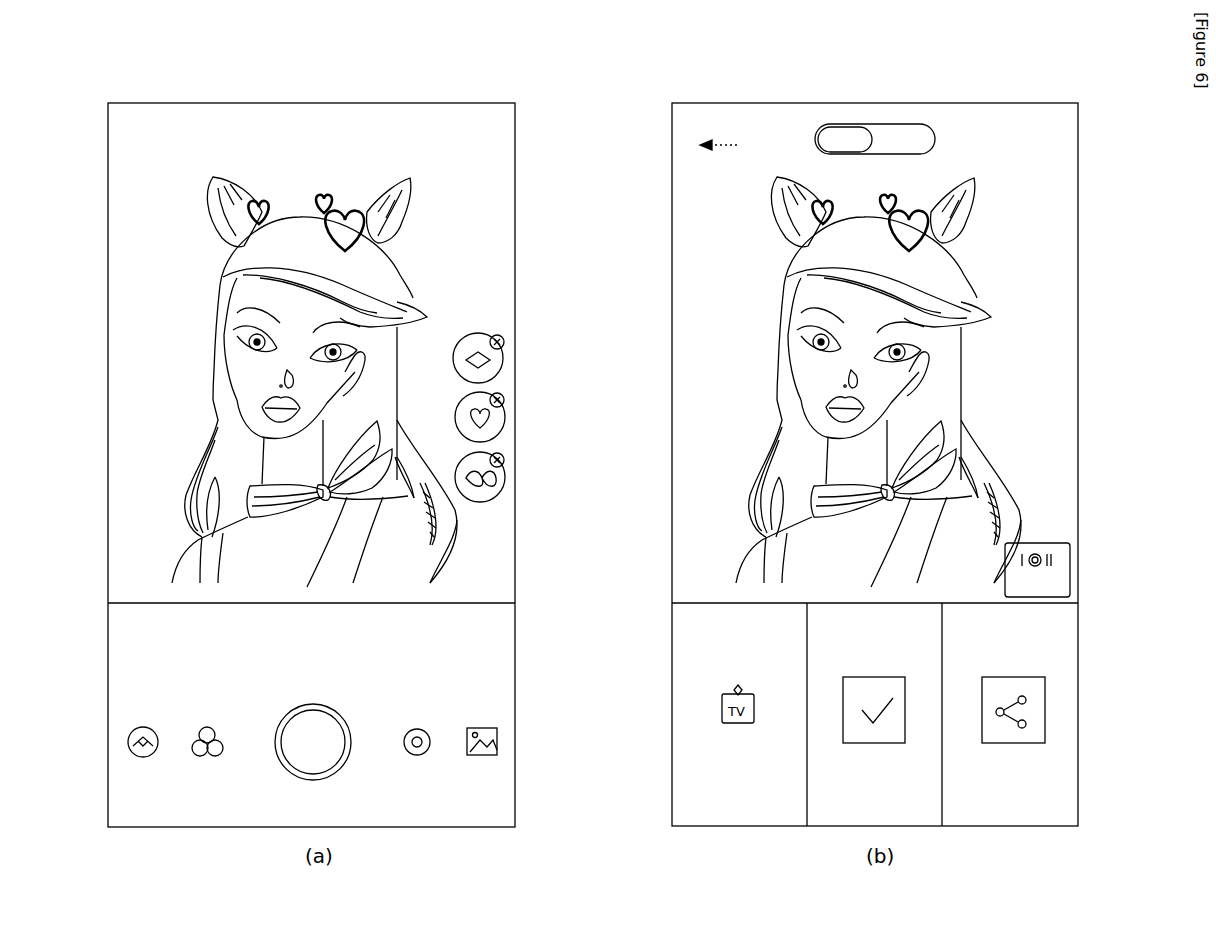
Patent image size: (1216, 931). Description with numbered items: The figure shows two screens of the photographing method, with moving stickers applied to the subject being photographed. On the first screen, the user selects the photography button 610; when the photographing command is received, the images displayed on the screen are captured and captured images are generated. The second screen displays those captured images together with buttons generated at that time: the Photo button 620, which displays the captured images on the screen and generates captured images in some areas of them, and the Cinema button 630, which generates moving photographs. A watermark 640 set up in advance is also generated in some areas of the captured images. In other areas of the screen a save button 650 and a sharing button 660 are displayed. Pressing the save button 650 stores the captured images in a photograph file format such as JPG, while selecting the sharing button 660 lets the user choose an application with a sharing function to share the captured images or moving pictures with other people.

The photography button 610 is at (327, 723).
The Photo button 620 is at (840, 126).
The Cinema button 630 is at (910, 125).
The watermark 640 is at (1072, 572).
The save button 650 is at (905, 710).
The sharing button 660 is at (1045, 712).